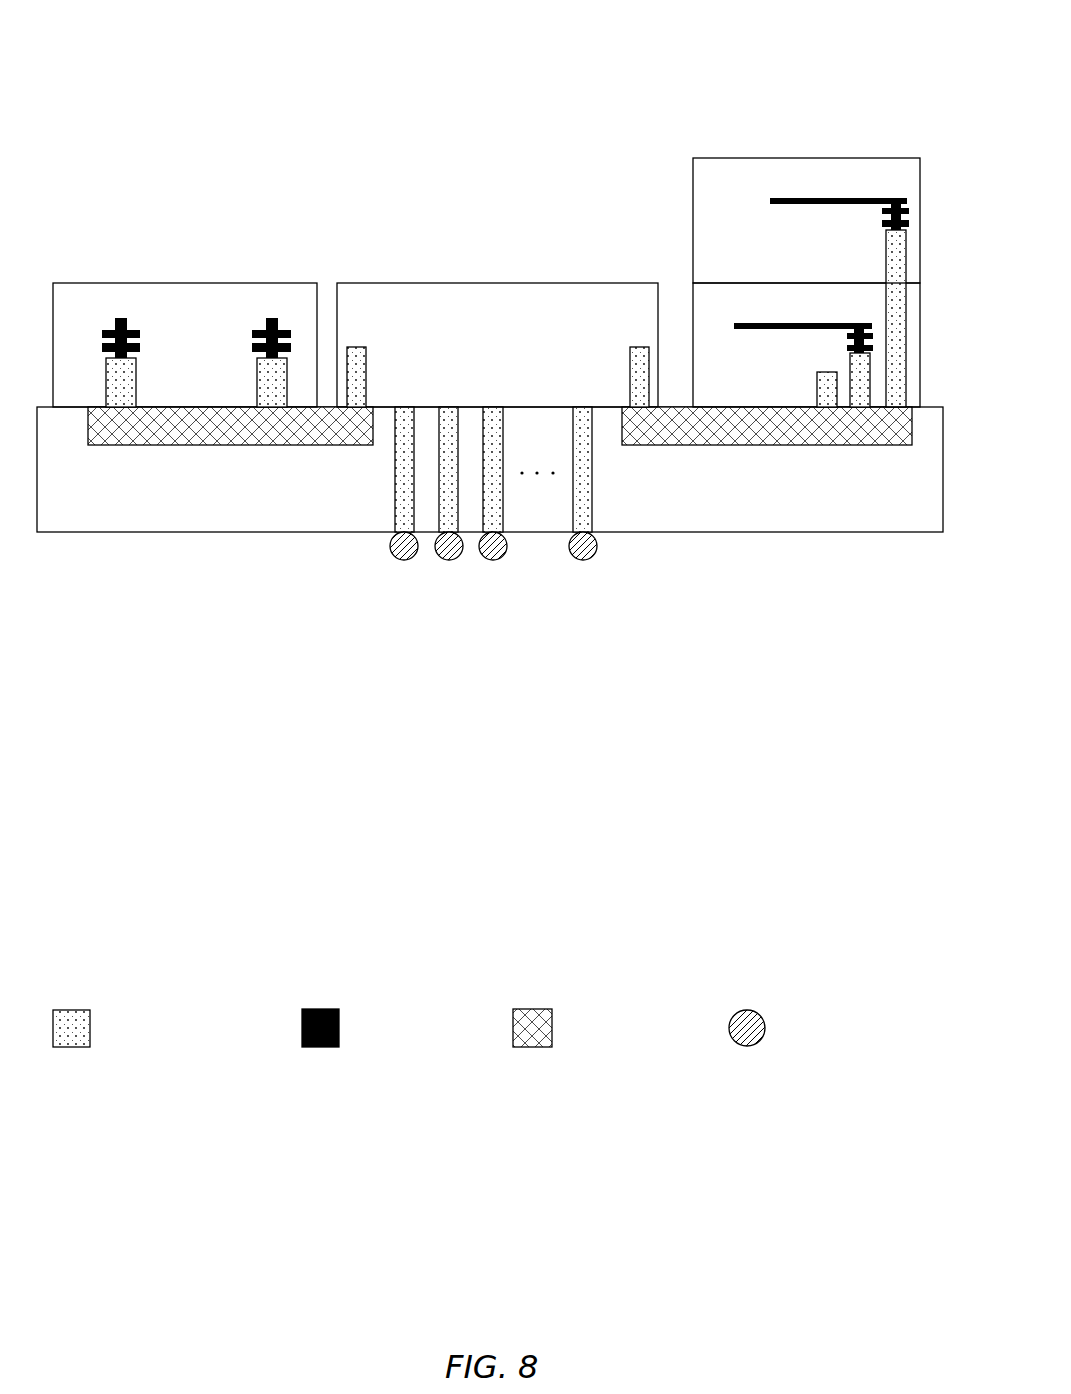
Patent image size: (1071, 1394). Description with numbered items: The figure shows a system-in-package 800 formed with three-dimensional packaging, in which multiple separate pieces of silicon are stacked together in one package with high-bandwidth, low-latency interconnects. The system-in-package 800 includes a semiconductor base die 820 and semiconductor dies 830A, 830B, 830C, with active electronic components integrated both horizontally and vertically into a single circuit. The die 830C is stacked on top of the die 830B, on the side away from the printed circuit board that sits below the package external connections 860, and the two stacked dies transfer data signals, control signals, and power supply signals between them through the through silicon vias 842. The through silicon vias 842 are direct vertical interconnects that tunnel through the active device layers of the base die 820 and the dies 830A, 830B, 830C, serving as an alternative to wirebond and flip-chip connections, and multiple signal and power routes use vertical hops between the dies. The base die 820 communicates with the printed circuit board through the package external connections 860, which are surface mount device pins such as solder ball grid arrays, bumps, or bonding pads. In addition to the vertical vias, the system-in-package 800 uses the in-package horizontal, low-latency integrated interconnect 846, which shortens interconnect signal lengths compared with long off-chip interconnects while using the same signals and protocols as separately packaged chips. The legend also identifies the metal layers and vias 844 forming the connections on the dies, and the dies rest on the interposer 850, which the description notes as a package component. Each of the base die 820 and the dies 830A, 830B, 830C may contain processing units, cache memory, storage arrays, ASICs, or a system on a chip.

The system-in-package 800 is at (774, 77).
The semiconductor base die 820 is at (478, 370).
The semiconductor die 830A is at (157, 343).
The semiconductor die 830B is at (798, 396).
The semiconductor die 830C is at (798, 272).
The through silicon vias 842 is at (73, 1010).
The metal layers and vias 844 is at (320, 1009).
The integrated interconnect 846 is at (535, 1009).
The interposer 850 is at (935, 520).
The package external connections 860 is at (750, 1010).